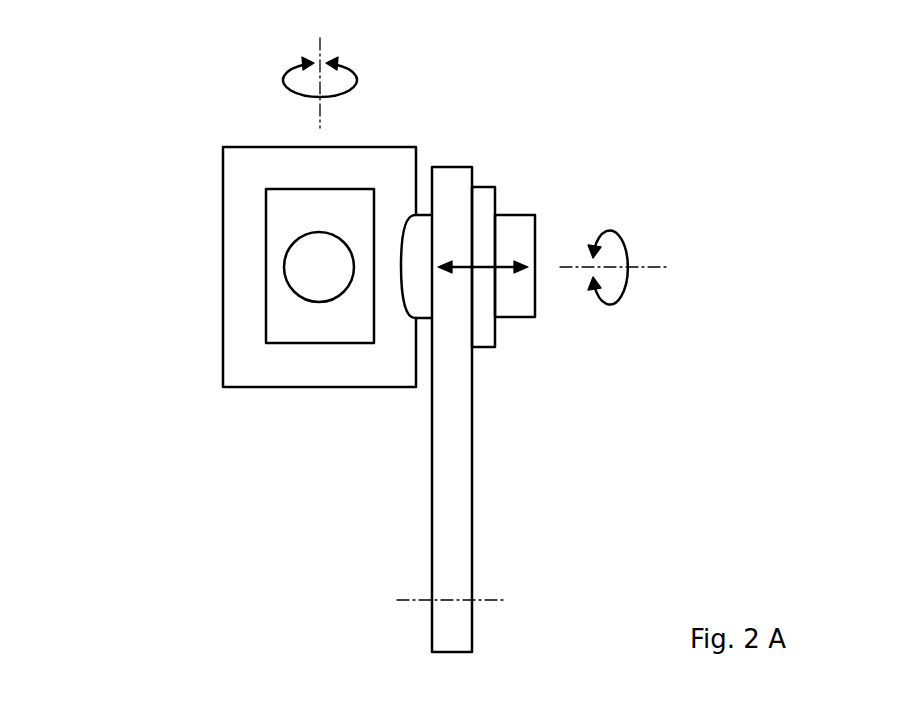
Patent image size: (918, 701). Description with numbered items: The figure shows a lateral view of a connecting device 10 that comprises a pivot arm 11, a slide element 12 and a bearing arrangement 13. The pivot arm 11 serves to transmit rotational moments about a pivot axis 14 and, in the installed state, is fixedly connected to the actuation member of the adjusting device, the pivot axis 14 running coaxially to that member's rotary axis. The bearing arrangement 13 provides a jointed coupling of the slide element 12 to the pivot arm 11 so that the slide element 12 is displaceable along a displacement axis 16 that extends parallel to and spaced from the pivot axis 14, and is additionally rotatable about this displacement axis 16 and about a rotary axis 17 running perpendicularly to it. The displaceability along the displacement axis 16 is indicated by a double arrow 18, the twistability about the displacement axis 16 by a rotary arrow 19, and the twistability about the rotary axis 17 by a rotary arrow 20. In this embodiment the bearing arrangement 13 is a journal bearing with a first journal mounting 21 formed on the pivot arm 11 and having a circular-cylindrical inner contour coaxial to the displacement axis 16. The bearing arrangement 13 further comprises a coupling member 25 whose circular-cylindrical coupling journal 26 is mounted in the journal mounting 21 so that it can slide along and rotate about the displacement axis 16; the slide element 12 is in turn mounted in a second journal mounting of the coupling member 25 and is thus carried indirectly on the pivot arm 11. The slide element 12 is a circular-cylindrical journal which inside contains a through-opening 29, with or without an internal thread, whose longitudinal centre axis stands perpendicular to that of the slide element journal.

The connecting device 10 is at (712, 134).
The pivot arm 11 is at (455, 477).
The slide element 12 is at (258, 266).
The bearing arrangement 13 is at (200, 330).
The pivot axis 14 is at (492, 600).
The displacement axis 16 is at (650, 262).
The rotary axis 17 is at (318, 118).
The double arrow 18 is at (481, 268).
The rotary arrow 19 is at (617, 230).
The rotary arrow 20 is at (282, 78).
The journal mounting 21 is at (432, 257).
The coupling member 25 is at (215, 188).
The coupling journal 26 is at (423, 307).
The through-opening 29 is at (333, 281).